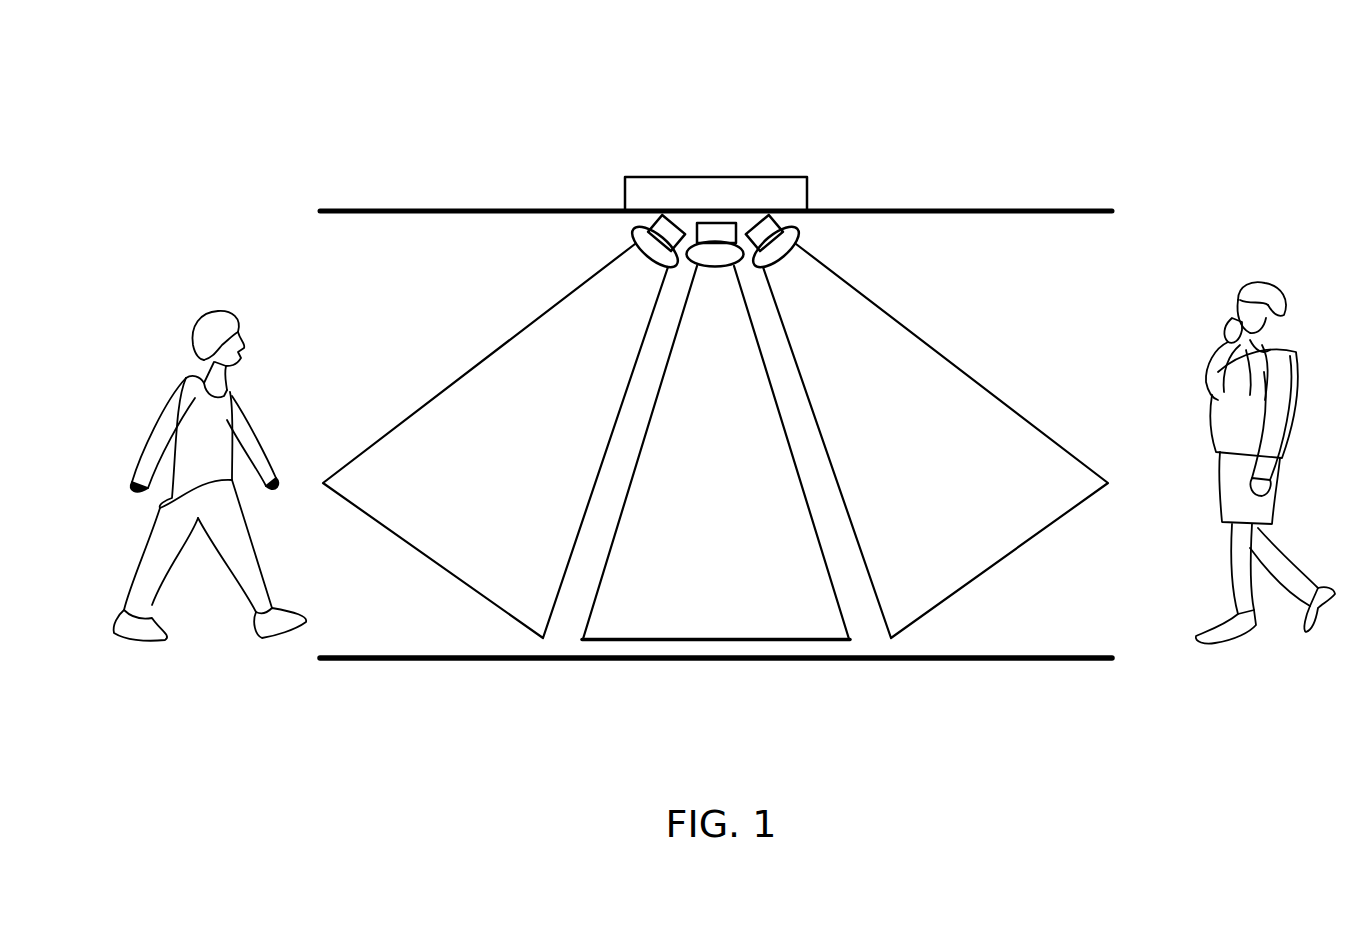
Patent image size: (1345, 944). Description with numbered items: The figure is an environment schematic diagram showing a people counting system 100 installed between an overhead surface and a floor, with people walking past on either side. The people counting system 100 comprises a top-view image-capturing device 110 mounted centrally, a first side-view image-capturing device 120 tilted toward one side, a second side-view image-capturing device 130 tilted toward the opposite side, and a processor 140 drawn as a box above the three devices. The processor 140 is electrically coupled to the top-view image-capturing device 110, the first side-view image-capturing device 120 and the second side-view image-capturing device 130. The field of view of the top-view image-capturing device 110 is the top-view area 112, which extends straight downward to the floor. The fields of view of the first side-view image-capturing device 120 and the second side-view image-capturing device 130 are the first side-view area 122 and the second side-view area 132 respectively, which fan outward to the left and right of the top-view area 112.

The people counting system 100 is at (1168, 145).
The top-view image-capturing device 110 is at (717, 233).
The top-view area 112 is at (720, 598).
The first side-view image-capturing device 120 is at (668, 233).
The first side-view area 122 is at (472, 557).
The second side-view image-capturing device 130 is at (763, 231).
The second side-view area 132 is at (973, 557).
The processor 140 is at (750, 176).